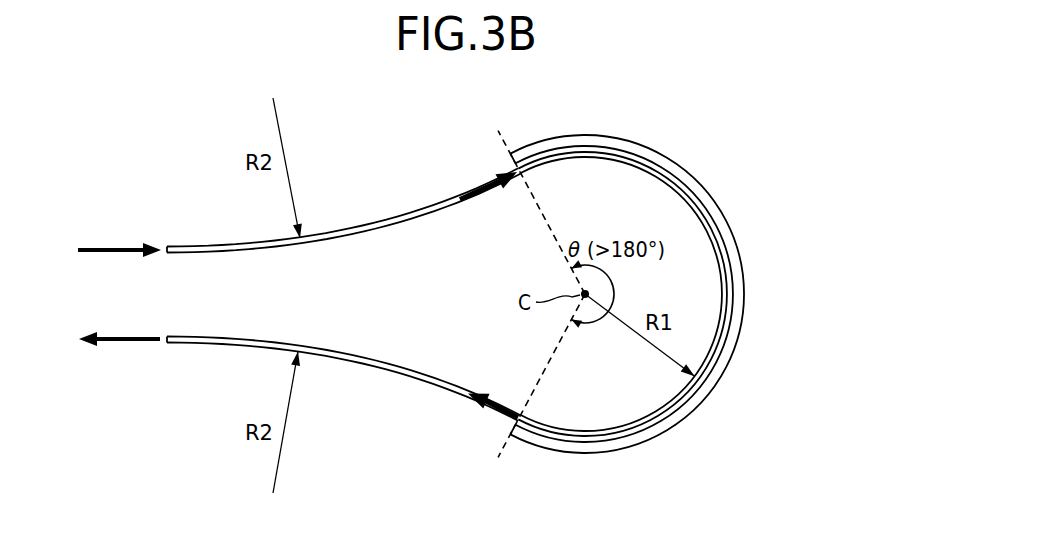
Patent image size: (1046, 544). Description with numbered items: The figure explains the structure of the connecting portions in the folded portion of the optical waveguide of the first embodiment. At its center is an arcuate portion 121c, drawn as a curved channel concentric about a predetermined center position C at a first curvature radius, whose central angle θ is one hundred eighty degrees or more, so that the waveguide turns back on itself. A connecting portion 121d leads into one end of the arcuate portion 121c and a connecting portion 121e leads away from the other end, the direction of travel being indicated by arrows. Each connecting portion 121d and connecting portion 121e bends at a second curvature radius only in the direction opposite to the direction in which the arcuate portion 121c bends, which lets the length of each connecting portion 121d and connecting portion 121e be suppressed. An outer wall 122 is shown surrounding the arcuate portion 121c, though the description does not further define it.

The arcuate portion 121c is at (723, 257).
The connecting portion 121d is at (353, 228).
The connecting portion 121e is at (353, 361).
The outer wall of curved channel 122 is at (748, 295).